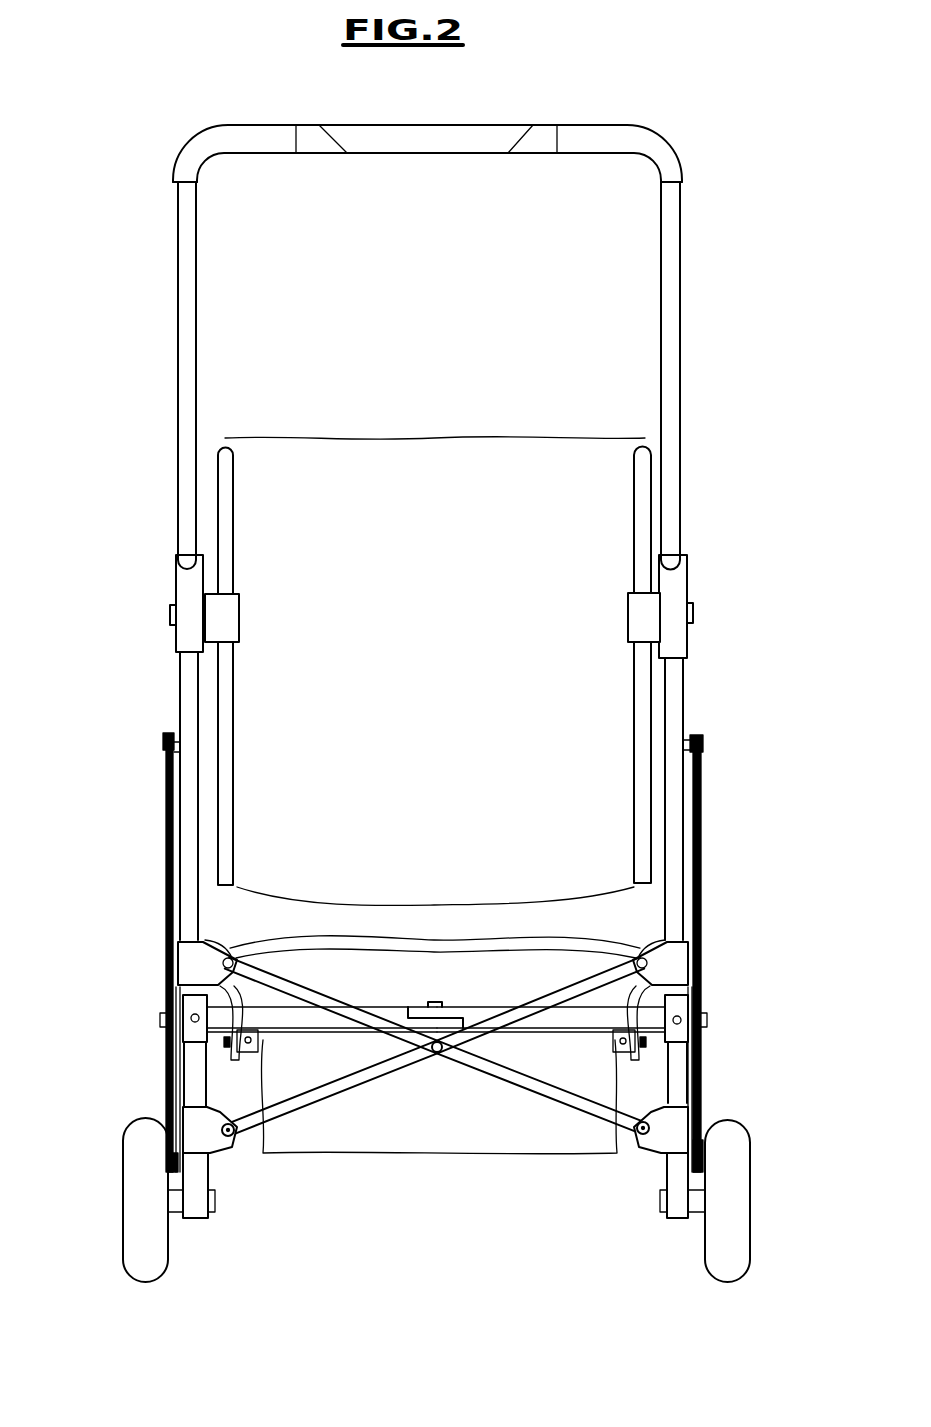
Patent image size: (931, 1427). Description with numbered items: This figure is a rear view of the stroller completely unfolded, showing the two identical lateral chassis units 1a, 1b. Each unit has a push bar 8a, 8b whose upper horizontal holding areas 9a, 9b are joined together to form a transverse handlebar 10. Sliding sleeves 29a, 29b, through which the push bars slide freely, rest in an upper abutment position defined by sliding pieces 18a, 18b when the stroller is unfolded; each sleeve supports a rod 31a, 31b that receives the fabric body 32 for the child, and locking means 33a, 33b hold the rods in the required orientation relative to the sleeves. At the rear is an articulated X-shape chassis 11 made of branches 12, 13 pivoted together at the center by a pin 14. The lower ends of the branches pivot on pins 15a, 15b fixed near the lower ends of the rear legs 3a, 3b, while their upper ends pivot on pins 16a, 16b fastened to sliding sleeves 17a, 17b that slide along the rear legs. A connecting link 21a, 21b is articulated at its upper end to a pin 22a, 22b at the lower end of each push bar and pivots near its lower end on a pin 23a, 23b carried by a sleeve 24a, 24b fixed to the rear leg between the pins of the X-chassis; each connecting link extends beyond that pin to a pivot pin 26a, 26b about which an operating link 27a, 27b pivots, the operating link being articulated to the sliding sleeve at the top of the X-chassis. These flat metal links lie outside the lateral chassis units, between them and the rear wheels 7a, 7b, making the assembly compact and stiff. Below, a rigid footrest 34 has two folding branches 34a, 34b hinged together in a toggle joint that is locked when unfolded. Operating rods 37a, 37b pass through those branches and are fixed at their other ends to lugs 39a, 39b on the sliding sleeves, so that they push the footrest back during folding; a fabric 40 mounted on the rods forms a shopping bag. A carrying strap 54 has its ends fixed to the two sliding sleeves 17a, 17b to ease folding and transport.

The transverse handlebar 10 is at (472, 112).
The horizontal holding area 9a is at (243, 140).
The horizontal holding area 9b is at (596, 138).
The lateral chassis unit 1a is at (170, 304).
The lateral chassis unit 1b is at (690, 316).
The push bar 8a is at (185, 231).
The push bar 8b is at (667, 243).
The rod 31a is at (226, 470).
The rod 31b is at (650, 482).
The body 32 is at (550, 540).
The sliding piece 18a is at (189, 576).
The sliding piece 18b is at (672, 578).
The locking means 33a is at (170, 615).
The locking means 33b is at (693, 613).
The sliding sleeve 29a is at (214, 621).
The sliding sleeve 29b is at (642, 625).
The rear leg 3a is at (190, 768).
The rear leg 3b is at (673, 778).
The pin 22a is at (163, 740).
The pin 22b is at (702, 742).
The connecting link 21a is at (165, 818).
The connecting link 21b is at (702, 822).
The operating link 27a is at (170, 1072).
The operating link 27b is at (702, 1073).
The carrying strap 54 is at (395, 943).
The fabric 40 is at (518, 1157).
The pin 16a is at (215, 945).
The pin 16b is at (655, 945).
The sliding sleeve 17a is at (193, 955).
The sliding sleeve 17b is at (672, 957).
The X-shape chassis 11 is at (435, 1027).
The folding branch 34a is at (335, 1005).
The folding branch 34b is at (522, 1010).
The branch 12 is at (318, 1093).
The branch 13 is at (570, 1093).
The pin 14 is at (434, 1055).
The operating rod 37a is at (302, 1010).
The operating rod 37b is at (566, 1008).
The footrest 34 is at (429, 985).
The lug 39a is at (258, 1028).
The lug 39b is at (622, 1027).
The pin 23a is at (164, 1020).
The pin 23b is at (704, 1020).
The sleeve 24a is at (189, 1033).
The sleeve 24b is at (678, 1032).
The pivot pin 26a is at (168, 1162).
The pivot pin 26b is at (703, 1160).
The pin 15a is at (233, 1138).
The pin 15b is at (642, 1137).
The rear wheel 7a is at (150, 1262).
The rear wheel 7b is at (736, 1262).